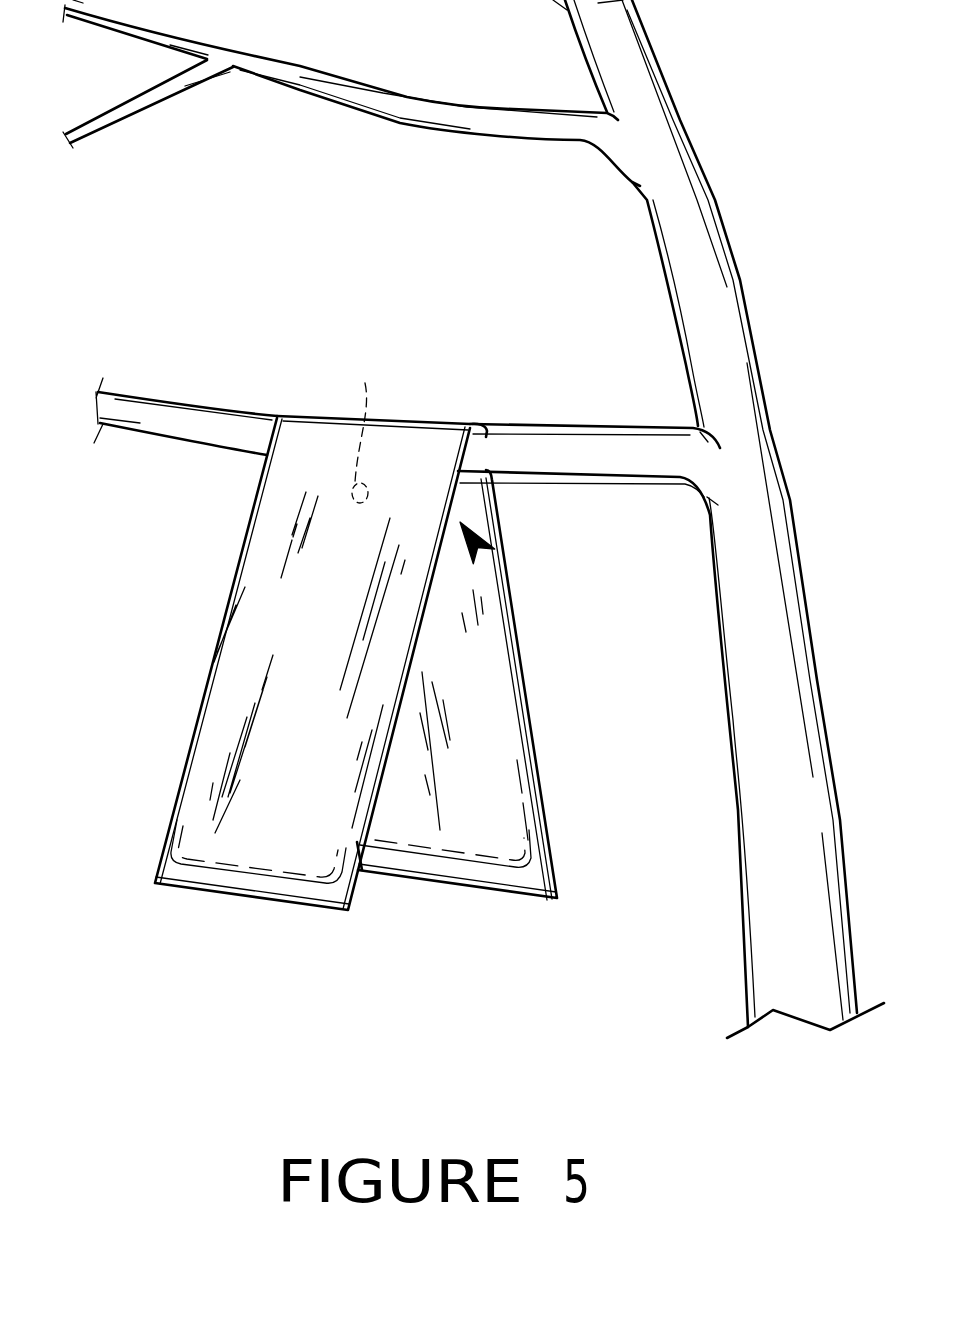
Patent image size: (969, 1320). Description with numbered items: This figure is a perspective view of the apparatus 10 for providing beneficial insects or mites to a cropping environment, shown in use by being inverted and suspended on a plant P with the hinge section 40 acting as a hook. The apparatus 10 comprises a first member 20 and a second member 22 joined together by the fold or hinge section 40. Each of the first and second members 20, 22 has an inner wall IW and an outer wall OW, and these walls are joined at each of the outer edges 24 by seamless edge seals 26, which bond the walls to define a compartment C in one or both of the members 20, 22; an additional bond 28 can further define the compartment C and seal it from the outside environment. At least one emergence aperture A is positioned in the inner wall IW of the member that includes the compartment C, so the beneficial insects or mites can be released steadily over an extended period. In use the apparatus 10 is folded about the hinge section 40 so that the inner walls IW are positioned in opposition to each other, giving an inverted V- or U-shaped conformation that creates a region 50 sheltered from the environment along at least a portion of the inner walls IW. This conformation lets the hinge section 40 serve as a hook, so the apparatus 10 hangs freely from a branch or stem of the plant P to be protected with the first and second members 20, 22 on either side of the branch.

The apparatus 10 is at (117, 545).
The first member 20 is at (512, 684).
The second member 22 is at (256, 633).
The outer edges 24 is at (155, 862).
The edge seals 26 is at (253, 512).
The additional bond 28 is at (444, 430).
The hinge section 40 is at (310, 413).
The sheltered region 50 is at (478, 548).
The emergence aperture A is at (359, 430).
The compartment C is at (238, 853).
The outer wall OW is at (287, 648).
The inner wall IW is at (467, 725).
The plant P is at (737, 328).